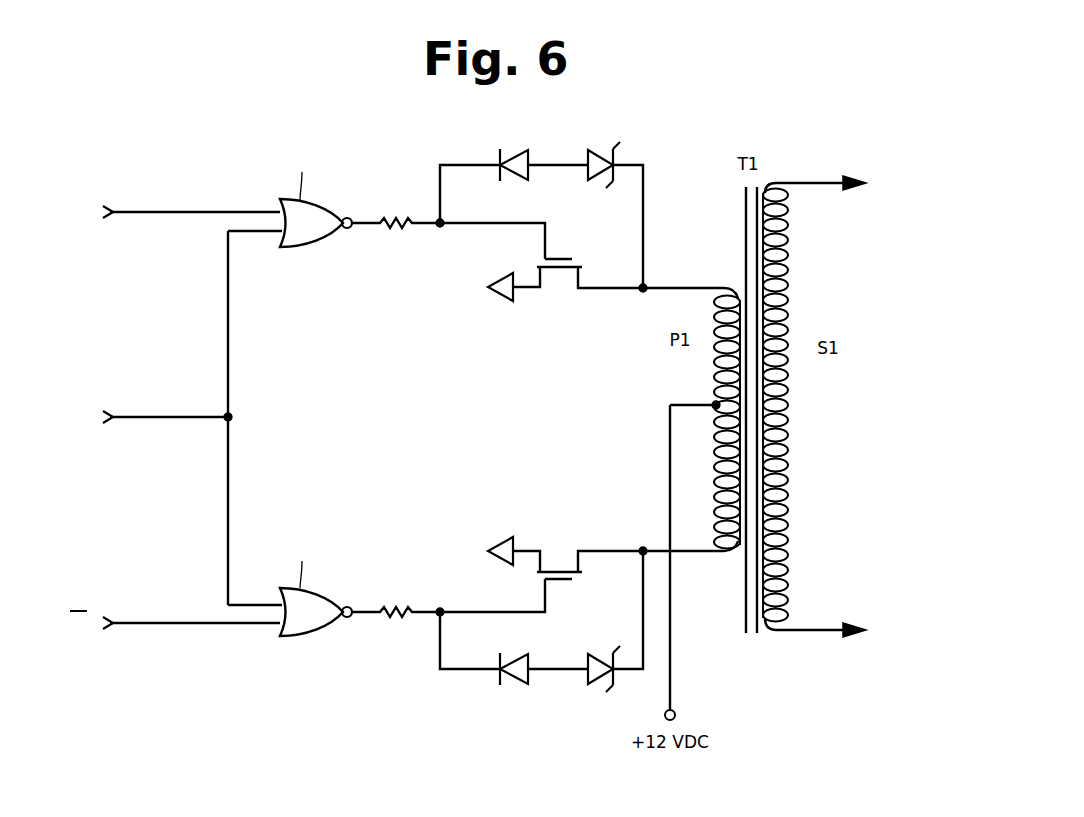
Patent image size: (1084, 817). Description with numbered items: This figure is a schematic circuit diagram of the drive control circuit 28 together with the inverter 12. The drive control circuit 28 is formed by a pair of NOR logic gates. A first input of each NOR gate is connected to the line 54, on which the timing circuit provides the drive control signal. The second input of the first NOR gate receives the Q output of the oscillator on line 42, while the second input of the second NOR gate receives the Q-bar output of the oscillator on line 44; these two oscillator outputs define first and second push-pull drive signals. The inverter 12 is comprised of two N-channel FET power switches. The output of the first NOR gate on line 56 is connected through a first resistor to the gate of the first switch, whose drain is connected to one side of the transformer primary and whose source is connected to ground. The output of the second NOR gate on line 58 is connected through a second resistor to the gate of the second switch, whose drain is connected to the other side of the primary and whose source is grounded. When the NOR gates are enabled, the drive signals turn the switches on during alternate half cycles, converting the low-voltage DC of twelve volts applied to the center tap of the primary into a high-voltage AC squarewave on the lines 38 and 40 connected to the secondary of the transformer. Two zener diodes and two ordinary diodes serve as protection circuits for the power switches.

The line 42 is at (185, 212).
The line 44 is at (178, 623).
The line 54 is at (170, 417).
The line 56 is at (358, 218).
The line 58 is at (368, 610).
The drive control circuit 28 is at (283, 394).
The inverter 12 is at (541, 417).
The line 38 is at (805, 185).
The line 40 is at (820, 632).